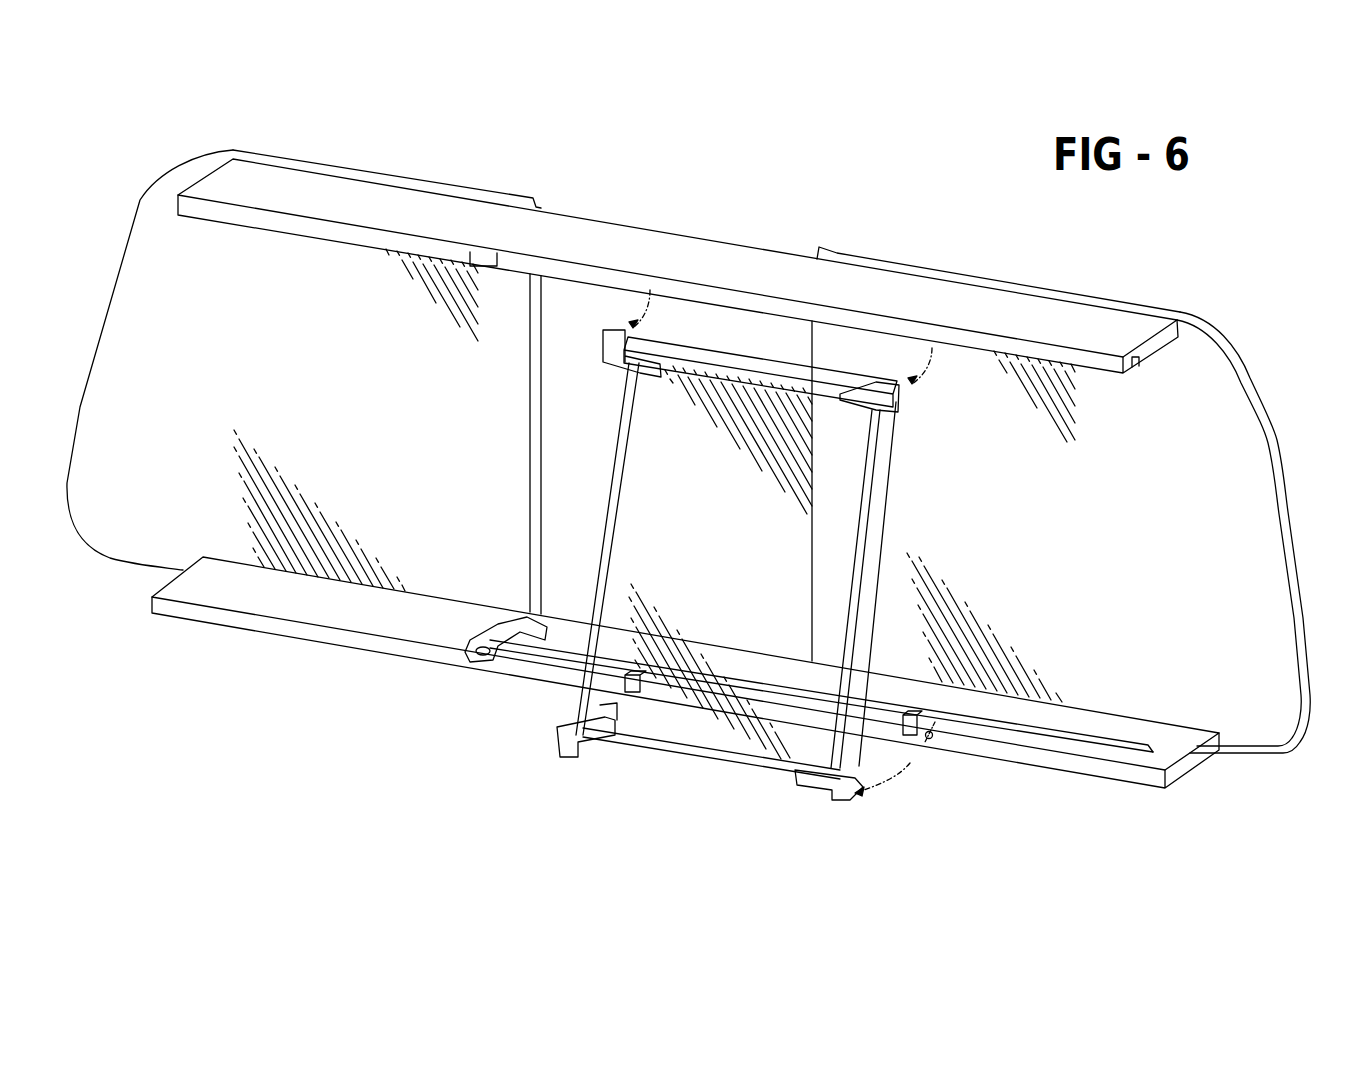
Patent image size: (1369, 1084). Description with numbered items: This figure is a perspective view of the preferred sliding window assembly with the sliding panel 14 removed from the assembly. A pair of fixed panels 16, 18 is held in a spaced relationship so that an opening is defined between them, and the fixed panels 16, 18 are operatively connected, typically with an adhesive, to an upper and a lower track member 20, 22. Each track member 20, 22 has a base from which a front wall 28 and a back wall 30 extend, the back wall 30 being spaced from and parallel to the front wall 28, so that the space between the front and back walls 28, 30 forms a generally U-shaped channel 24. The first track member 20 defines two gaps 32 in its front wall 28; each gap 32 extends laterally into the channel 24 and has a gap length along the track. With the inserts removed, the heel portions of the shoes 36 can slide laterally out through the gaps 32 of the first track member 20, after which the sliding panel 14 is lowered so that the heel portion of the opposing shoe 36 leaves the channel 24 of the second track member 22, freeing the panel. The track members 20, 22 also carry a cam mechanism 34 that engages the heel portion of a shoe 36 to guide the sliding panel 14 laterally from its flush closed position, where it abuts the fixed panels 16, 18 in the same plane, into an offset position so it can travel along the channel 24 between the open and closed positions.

The sliding panel 14 is at (698, 700).
The fixed panel 16 is at (1235, 568).
The fixed panel 18 is at (137, 310).
The first track member 20 is at (1140, 786).
The second track member 22 is at (607, 222).
The channel 24 is at (1062, 740).
The front wall 28 is at (1000, 740).
The back wall 30 is at (1135, 735).
The gap 32 is at (643, 687).
The cam mechanism 34 is at (493, 648).
The shoe 36 is at (613, 343).